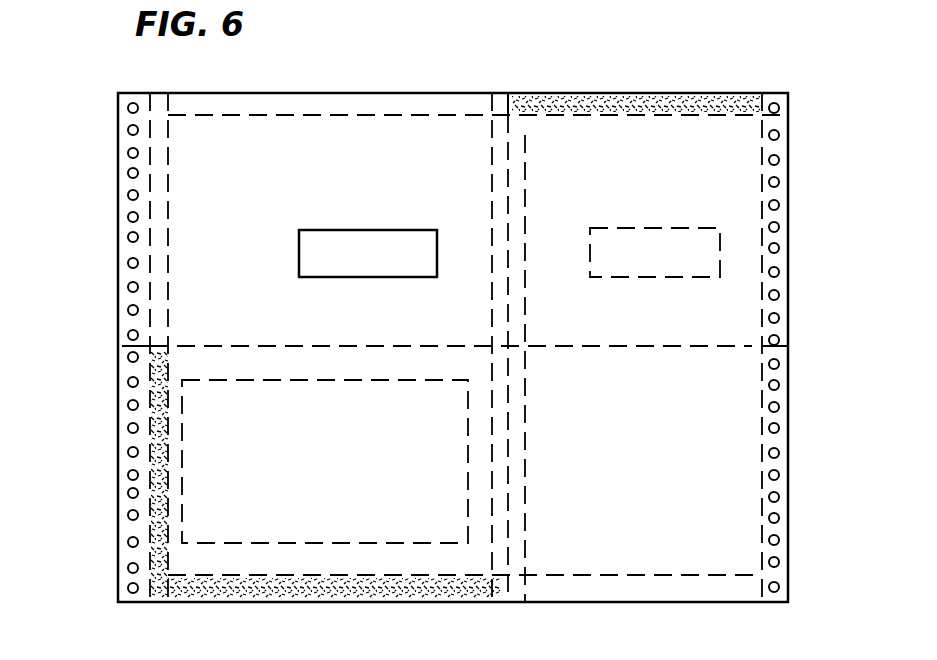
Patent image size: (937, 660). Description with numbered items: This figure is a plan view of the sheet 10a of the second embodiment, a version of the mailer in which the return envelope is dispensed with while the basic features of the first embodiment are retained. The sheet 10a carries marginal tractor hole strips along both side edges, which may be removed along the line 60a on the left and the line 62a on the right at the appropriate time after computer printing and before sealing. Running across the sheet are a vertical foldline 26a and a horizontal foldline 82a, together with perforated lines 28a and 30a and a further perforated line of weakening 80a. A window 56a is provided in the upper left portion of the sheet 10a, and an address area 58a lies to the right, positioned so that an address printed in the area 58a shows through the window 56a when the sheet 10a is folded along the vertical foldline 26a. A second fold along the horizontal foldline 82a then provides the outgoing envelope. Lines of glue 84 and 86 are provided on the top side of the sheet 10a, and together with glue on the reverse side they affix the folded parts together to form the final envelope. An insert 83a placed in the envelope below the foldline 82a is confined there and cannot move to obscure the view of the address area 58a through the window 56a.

The sheet 10a is at (200, 218).
The vertical foldline 26a is at (512, 108).
The perforated line 28a is at (497, 130).
The perforated line 30a is at (527, 137).
The window 56a is at (393, 247).
The address area 58a is at (747, 213).
The marginal strip removal line 60a is at (148, 257).
The marginal strip removal line 62a is at (760, 312).
The perforated line of weakening 80a is at (165, 317).
The horizontal foldline 82a is at (220, 348).
The insert 83a is at (180, 462).
The line of glue 84 is at (152, 520).
The line of glue 86 is at (392, 590).